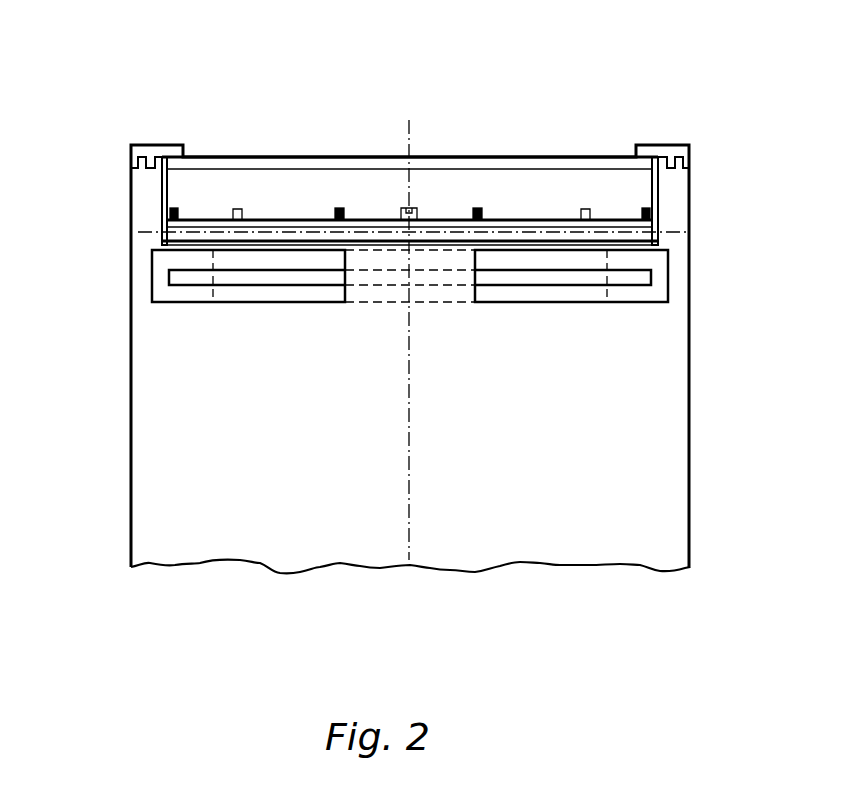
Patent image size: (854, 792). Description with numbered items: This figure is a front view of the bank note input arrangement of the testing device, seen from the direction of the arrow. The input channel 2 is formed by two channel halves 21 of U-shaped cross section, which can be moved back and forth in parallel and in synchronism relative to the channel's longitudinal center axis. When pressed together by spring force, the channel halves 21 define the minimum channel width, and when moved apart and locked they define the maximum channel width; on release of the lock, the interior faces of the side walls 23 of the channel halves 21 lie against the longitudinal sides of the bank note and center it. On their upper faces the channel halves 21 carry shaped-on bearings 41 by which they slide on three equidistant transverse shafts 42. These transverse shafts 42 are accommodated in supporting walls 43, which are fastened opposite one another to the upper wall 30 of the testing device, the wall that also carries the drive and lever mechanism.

The input channel 2 is at (450, 277).
The channel halves 21 is at (270, 298).
The side walls 23 is at (157, 274).
The upper wall 30 is at (532, 162).
The shaped-on bearings 41 is at (172, 208).
The transverse shafts 42 is at (378, 228).
The supporting walls 43 is at (163, 200).